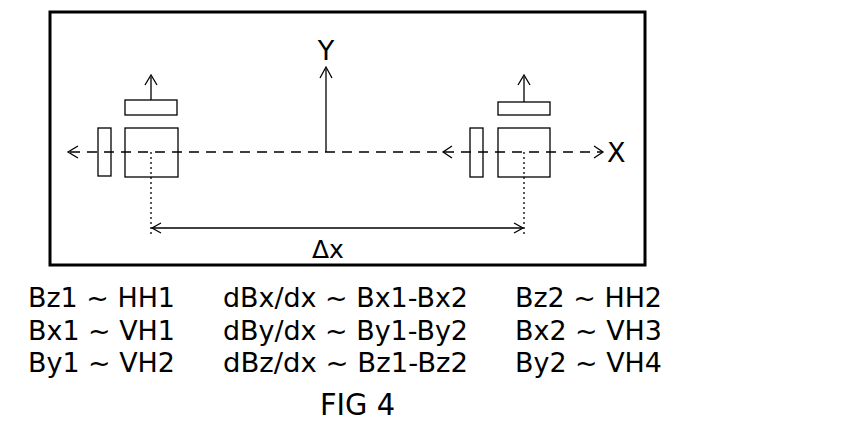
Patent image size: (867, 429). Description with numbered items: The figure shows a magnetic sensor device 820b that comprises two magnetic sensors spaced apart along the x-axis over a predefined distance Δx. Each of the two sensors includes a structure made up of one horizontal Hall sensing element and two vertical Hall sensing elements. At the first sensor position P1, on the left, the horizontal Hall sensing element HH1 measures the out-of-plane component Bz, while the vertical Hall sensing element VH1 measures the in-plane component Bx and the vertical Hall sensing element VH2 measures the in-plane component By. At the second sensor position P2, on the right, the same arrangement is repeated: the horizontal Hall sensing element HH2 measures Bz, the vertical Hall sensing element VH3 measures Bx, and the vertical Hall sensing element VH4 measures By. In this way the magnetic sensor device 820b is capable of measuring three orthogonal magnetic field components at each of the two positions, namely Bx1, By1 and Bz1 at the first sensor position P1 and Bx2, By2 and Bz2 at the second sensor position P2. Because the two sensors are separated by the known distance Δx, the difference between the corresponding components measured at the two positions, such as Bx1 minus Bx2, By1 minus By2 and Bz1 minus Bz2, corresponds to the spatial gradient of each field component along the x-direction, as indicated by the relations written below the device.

The magnetic sensor device 820b is at (646, 187).
The vertical Hall sensing element VH1 is at (85, 136).
The vertical Hall sensing element VH2 is at (184, 101).
The vertical Hall sensing element VH3 is at (465, 137).
The vertical Hall sensing element VH4 is at (557, 101).
The horizontal Hall sensing element HH1 is at (186, 159).
The horizontal Hall sensing element HH2 is at (556, 166).
The first sensor position P1 is at (135, 182).
The second sensor position P2 is at (508, 183).